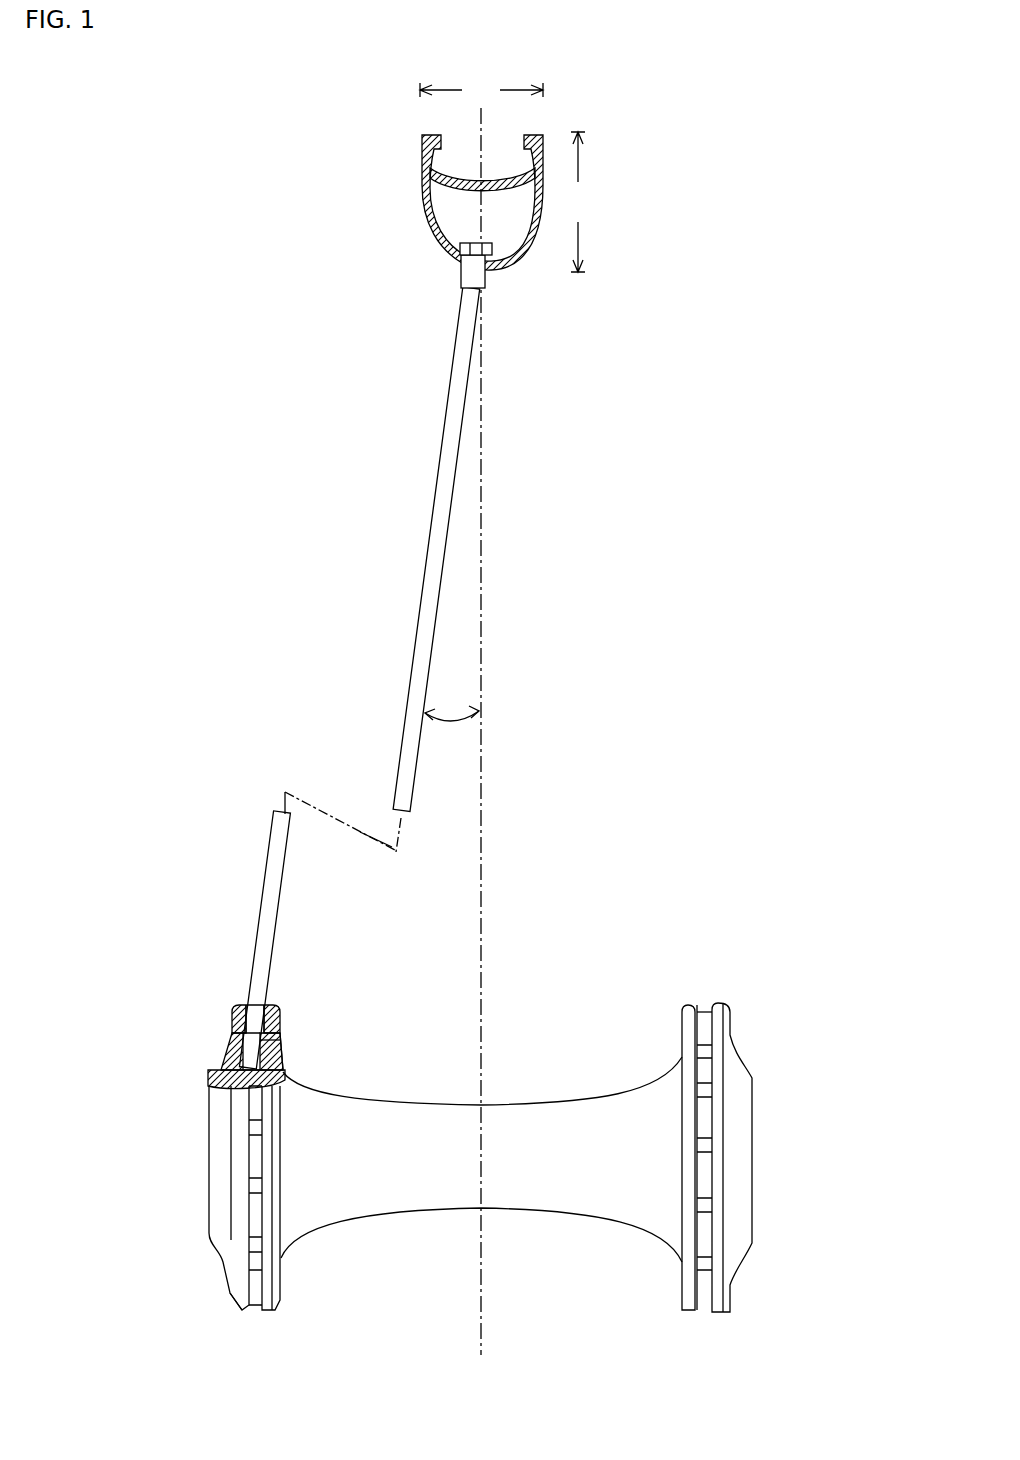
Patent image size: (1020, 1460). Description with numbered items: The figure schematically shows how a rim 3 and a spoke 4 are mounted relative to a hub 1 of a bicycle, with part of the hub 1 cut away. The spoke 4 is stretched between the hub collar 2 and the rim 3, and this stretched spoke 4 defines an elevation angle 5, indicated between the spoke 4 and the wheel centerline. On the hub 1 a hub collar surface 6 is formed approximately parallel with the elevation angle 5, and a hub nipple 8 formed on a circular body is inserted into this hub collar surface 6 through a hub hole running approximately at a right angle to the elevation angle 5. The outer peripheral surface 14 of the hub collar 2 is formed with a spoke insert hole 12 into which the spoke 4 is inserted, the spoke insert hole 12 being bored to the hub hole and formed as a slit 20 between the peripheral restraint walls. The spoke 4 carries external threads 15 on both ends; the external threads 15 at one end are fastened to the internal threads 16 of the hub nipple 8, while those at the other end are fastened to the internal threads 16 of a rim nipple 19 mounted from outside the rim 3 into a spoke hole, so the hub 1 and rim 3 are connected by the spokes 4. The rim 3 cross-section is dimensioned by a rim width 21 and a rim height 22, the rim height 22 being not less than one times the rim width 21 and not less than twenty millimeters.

The hub 1 is at (511, 1156).
The hub collar 2 is at (280, 1010).
The rim 3 is at (400, 197).
The spoke 4 is at (428, 575).
The elevation angle 5 is at (455, 721).
The hub collar surface 6 is at (230, 1021).
The hub nipple 8 is at (230, 1052).
The spoke insert hole 12 is at (253, 1128).
The outer peripheral surface of a hub collar 14 is at (245, 1002).
The external threads 15 is at (283, 1043).
The internal threads 16 is at (281, 1051).
The rim nipple 19 is at (467, 284).
The slit 20 is at (702, 1000).
The rim width 21 is at (481, 90).
The rim height 22 is at (582, 202).